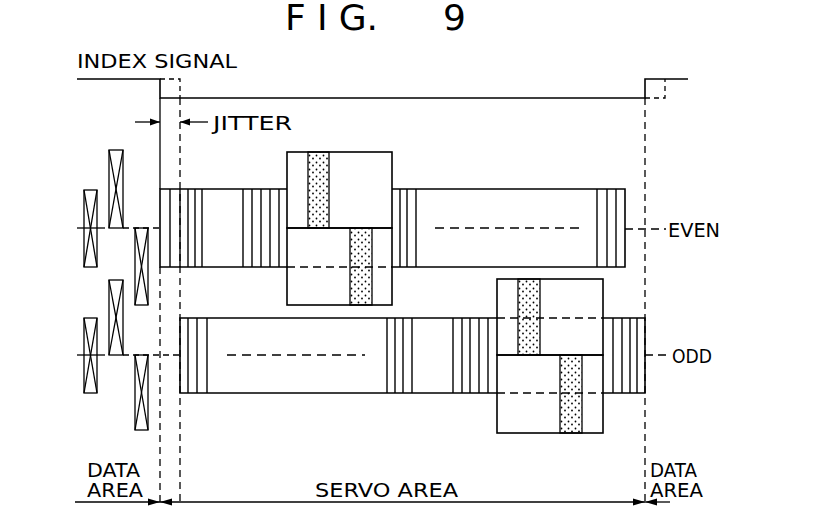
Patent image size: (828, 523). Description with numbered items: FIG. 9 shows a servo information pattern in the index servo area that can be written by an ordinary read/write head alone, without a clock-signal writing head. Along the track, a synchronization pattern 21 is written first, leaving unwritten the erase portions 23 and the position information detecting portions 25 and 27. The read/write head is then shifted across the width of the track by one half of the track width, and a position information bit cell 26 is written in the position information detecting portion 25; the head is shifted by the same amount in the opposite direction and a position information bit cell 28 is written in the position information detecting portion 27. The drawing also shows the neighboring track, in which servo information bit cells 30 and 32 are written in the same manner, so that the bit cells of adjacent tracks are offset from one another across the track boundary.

The synchronization pattern 21 is at (612, 197).
The erase portion 23 is at (225, 205).
The position information detecting portion 25 is at (365, 165).
The position information bit cell 26 is at (317, 160).
The position information detecting portion 27 is at (303, 290).
The position information bit cell 28 is at (365, 291).
The servo information bit cell 30 is at (525, 284).
The servo information bit cell 32 is at (572, 425).